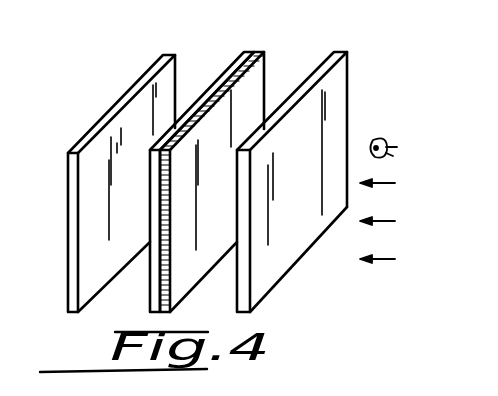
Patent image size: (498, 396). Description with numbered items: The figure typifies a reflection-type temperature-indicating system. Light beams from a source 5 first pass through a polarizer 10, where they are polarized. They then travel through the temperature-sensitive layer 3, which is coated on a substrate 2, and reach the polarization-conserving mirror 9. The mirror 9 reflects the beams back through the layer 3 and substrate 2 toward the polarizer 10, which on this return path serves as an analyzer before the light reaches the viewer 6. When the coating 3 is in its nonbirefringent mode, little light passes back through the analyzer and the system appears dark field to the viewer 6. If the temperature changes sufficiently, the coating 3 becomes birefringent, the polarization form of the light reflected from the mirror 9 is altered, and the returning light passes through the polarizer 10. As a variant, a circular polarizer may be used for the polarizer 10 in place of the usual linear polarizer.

The substrate 2 is at (251, 52).
The temperature-sensitive layer 3 is at (264, 51).
The source 5 is at (390, 188).
The viewer 6 is at (388, 137).
The polarization-conserving mirror 9 is at (176, 52).
The polarizer 10 is at (349, 52).